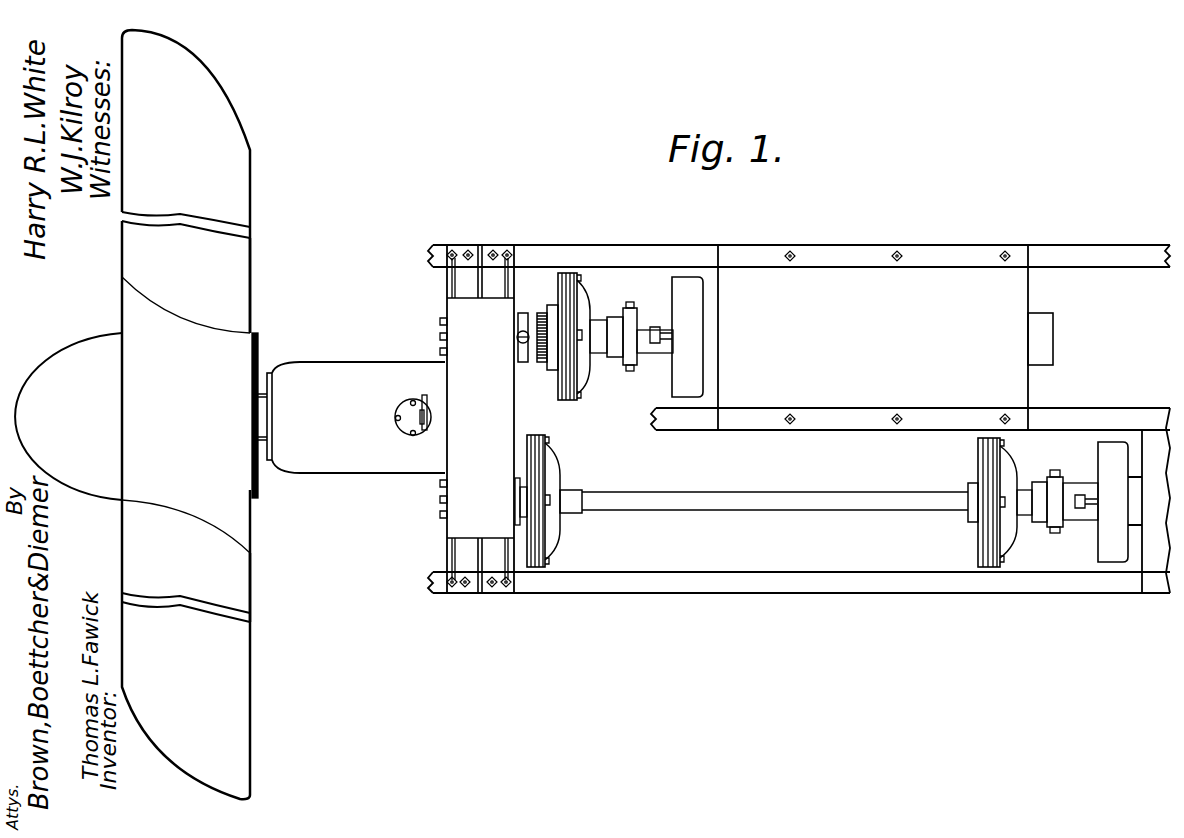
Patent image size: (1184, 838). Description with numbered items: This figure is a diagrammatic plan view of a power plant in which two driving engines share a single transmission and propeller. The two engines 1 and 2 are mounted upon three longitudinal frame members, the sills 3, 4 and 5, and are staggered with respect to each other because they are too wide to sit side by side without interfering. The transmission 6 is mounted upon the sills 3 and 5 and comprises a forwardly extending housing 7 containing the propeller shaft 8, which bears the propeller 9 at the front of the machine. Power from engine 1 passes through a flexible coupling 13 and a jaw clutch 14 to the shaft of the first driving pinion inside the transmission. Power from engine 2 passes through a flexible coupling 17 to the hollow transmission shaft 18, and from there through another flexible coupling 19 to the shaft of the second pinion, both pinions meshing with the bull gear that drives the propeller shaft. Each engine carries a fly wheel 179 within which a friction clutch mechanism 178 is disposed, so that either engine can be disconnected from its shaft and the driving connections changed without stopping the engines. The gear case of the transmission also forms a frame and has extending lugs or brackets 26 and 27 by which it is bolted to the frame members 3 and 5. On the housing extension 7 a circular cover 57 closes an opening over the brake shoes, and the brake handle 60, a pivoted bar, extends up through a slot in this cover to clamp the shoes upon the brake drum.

The engine 1 is at (843, 275).
The engine 2 is at (1158, 430).
The longitudinal sill 3 is at (1072, 258).
The longitudinal sill 4 is at (1040, 410).
The longitudinal sill 5 is at (1011, 583).
The transmission 6 is at (440, 319).
The housing 7 is at (314, 368).
The propeller shaft 8 is at (263, 396).
The propeller 9 is at (237, 297).
The flexible coupling 13 is at (565, 297).
The jaw clutch 14 is at (543, 307).
The flexible coupling 17 is at (975, 528).
The hollow transmission shaft 18 is at (862, 503).
The flexible coupling 19 is at (553, 536).
The lug or bracket 26 is at (461, 245).
The lug or bracket 27 is at (495, 590).
The circular cover 57 is at (403, 423).
The brake handle 60 is at (428, 403).
The friction clutch mechanism 178 is at (665, 370).
The fly wheel 179 is at (686, 290).